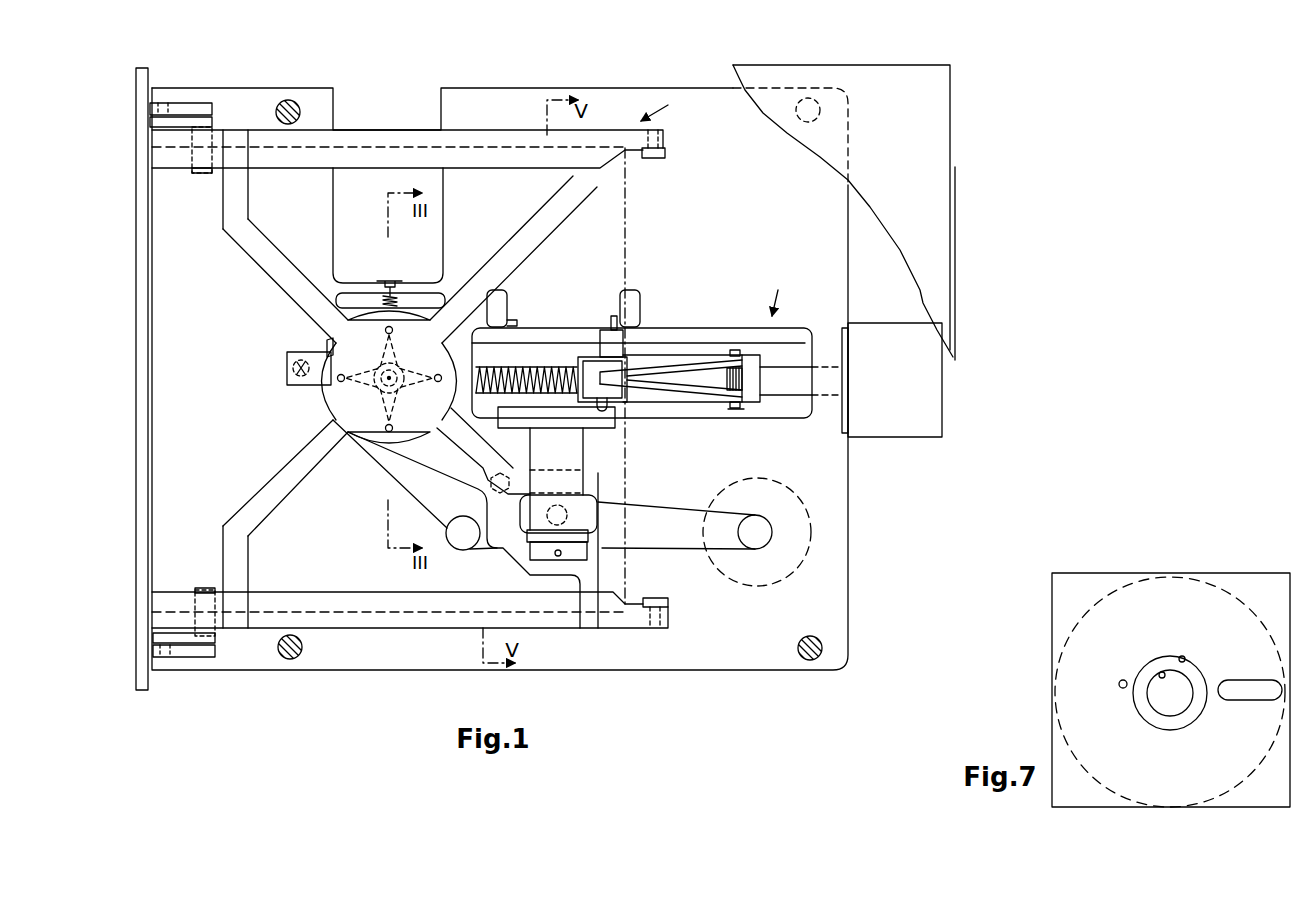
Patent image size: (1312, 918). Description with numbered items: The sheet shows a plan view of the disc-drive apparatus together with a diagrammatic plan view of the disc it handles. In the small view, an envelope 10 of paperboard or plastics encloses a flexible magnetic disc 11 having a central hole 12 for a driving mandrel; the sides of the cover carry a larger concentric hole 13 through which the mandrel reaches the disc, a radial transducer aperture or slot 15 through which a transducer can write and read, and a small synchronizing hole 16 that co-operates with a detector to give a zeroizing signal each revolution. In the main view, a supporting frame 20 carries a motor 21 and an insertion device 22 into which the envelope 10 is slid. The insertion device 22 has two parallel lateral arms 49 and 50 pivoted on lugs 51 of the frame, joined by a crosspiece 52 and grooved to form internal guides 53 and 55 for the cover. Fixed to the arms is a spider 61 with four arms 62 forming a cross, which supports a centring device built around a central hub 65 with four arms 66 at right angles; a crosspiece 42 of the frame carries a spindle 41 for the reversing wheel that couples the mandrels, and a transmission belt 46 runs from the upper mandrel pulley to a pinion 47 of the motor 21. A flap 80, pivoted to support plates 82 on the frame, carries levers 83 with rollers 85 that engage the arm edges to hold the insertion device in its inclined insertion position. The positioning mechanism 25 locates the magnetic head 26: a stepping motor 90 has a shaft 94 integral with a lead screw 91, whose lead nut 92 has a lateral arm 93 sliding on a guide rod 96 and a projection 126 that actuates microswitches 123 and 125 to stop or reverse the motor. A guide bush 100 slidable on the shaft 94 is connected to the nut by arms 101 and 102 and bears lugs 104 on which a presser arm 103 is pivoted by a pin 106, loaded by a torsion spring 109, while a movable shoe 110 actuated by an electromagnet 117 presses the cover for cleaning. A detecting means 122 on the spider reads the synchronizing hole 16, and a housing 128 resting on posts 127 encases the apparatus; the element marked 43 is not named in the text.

In FIG. 1, the envelope 10 is at (622, 565).
In FIG. 7, the envelope 10 is at (1250, 582).
In FIG. 7, the magnetic disc 11 is at (1174, 590).
In FIG. 7, the central hole 12 is at (1162, 672).
In FIG. 7, the hole 13 is at (1184, 657).
In FIG. 7, the transducer apertures 15 is at (1240, 684).
In FIG. 1, the synchronizing hole 16 is at (291, 352).
In FIG. 7, the synchronizing hole 16 is at (1121, 680).
In FIG. 1, the supporting frame 20 is at (848, 545).
In FIG. 1, the motor 21 is at (792, 494).
In FIG. 1, the insertion device 22 is at (667, 104).
In FIG. 1, the positioning mechanism 25 is at (779, 287).
In FIG. 1, the magnetic transducer 26 is at (598, 370).
In FIG. 1, the spindle 41 is at (390, 282).
In FIG. 1, the crosspiece 42 is at (420, 294).
In FIG. 1, the bracket 43 is at (383, 298).
In FIG. 1, the transmission belt 46 is at (685, 549).
In FIG. 1, the pinion 47 is at (755, 549).
In FIG. 1, the lateral arm 49 is at (421, 136).
In FIG. 1, the lateral arm 50 is at (550, 622).
In FIG. 1, the lugs 51 is at (665, 153).
In FIG. 1, the crosspiece 52 is at (230, 284).
In FIG. 1, the guide 53 is at (360, 147).
In FIG. 1, the guide 55 is at (392, 612).
In FIG. 1, the spider 61 is at (366, 440).
In FIG. 1, the arms 62 is at (273, 251).
In FIG. 1, the central hub 65 is at (378, 368).
In FIG. 1, the arms 66 is at (402, 352).
In FIG. 1, the flap 80 is at (148, 382).
In FIG. 1, the support plates 82 is at (183, 108).
In FIG. 1, the levers 83 is at (213, 121).
In FIG. 1, the roller 85 is at (201, 173).
In FIG. 1, the stepping motor 90 is at (918, 437).
In FIG. 1, the lead screw 91 is at (483, 393).
In FIG. 1, the lead nut 92 is at (607, 405).
In FIG. 1, the lateral arm 93 is at (606, 342).
In FIG. 1, the shaft 94 is at (806, 388).
In FIG. 1, the guide rod 96 is at (792, 340).
In FIG. 1, the guide bush 100 is at (752, 397).
In FIG. 1, the arm 101 is at (708, 355).
In FIG. 1, the arm 102 is at (690, 395).
In FIG. 1, the presser arm 103 is at (672, 370).
In FIG. 1, the lugs 104 is at (735, 350).
In FIG. 1, the pins 106 is at (740, 410).
In FIG. 1, the torsion springs 109 is at (740, 378).
In FIG. 1, the movable shoe 110 is at (512, 428).
In FIG. 1, the electromagnet 117 is at (587, 498).
In FIG. 1, the detecting means 122 is at (299, 385).
In FIG. 1, the microswitch 123 is at (500, 298).
In FIG. 1, the microswitch 125 is at (634, 293).
In FIG. 1, the projection 126 is at (613, 320).
In FIG. 1, the posts 127 is at (293, 104).
In FIG. 1, the housing 128 is at (950, 98).